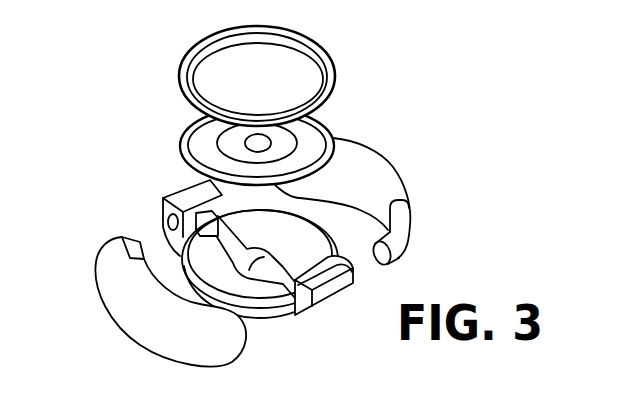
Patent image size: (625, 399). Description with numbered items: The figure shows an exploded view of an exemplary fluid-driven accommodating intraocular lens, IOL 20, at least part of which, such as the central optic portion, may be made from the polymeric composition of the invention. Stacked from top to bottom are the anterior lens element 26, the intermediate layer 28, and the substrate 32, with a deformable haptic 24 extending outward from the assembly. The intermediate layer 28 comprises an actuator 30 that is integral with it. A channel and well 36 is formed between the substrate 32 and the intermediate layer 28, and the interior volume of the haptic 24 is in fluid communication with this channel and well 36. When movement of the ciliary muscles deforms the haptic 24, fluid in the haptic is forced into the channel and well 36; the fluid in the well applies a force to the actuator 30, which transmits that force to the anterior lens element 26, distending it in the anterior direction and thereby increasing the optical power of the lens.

The IOL 20 is at (229, 192).
The haptic 24 is at (96, 4).
The anterior lens element 26 is at (316, 41).
The intermediate layer 28 is at (324, 112).
The actuator 30 is at (288, 136).
The substrate 32 is at (282, 307).
The channel and well 36 is at (254, 270).